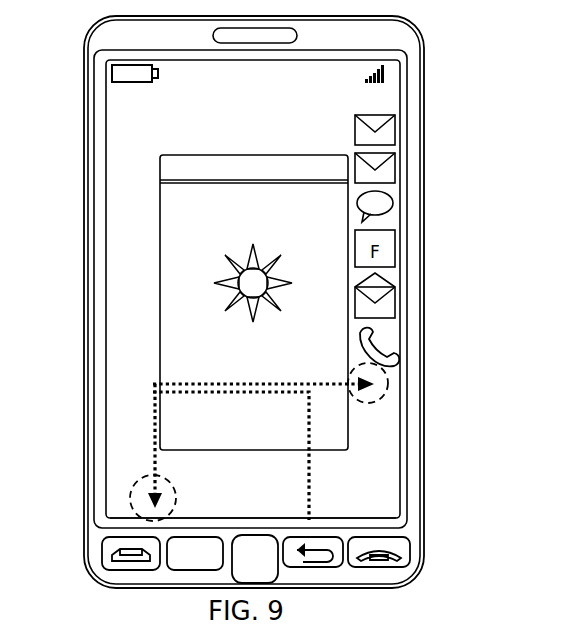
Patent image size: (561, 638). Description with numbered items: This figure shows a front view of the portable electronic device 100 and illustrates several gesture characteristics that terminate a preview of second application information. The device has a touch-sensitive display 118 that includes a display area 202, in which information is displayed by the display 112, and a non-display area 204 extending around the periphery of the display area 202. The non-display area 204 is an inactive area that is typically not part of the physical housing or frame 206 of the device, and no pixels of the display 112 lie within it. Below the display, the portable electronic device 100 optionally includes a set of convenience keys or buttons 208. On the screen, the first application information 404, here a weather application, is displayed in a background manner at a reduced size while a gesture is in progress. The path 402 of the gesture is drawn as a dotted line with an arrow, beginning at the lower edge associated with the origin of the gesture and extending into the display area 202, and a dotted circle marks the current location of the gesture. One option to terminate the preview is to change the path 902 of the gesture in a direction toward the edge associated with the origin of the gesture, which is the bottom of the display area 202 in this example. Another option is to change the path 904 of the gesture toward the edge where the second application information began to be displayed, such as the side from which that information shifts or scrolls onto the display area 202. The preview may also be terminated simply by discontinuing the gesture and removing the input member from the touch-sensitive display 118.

The portable electronic device 100 is at (421, 21).
The touch-sensitive display 118 is at (115, 90).
The display area 202 is at (113, 222).
The housing or frame 206 is at (84, 318).
The display 112 is at (125, 329).
The non-display area 204 is at (148, 522).
The convenience keys or buttons 208 is at (102, 547).
The first application information 404 is at (196, 153).
The path of the gesture 402 is at (307, 513).
The changed path of the gesture toward origin edge 902 is at (152, 418).
The changed path of the gesture toward information edge 904 is at (187, 384).